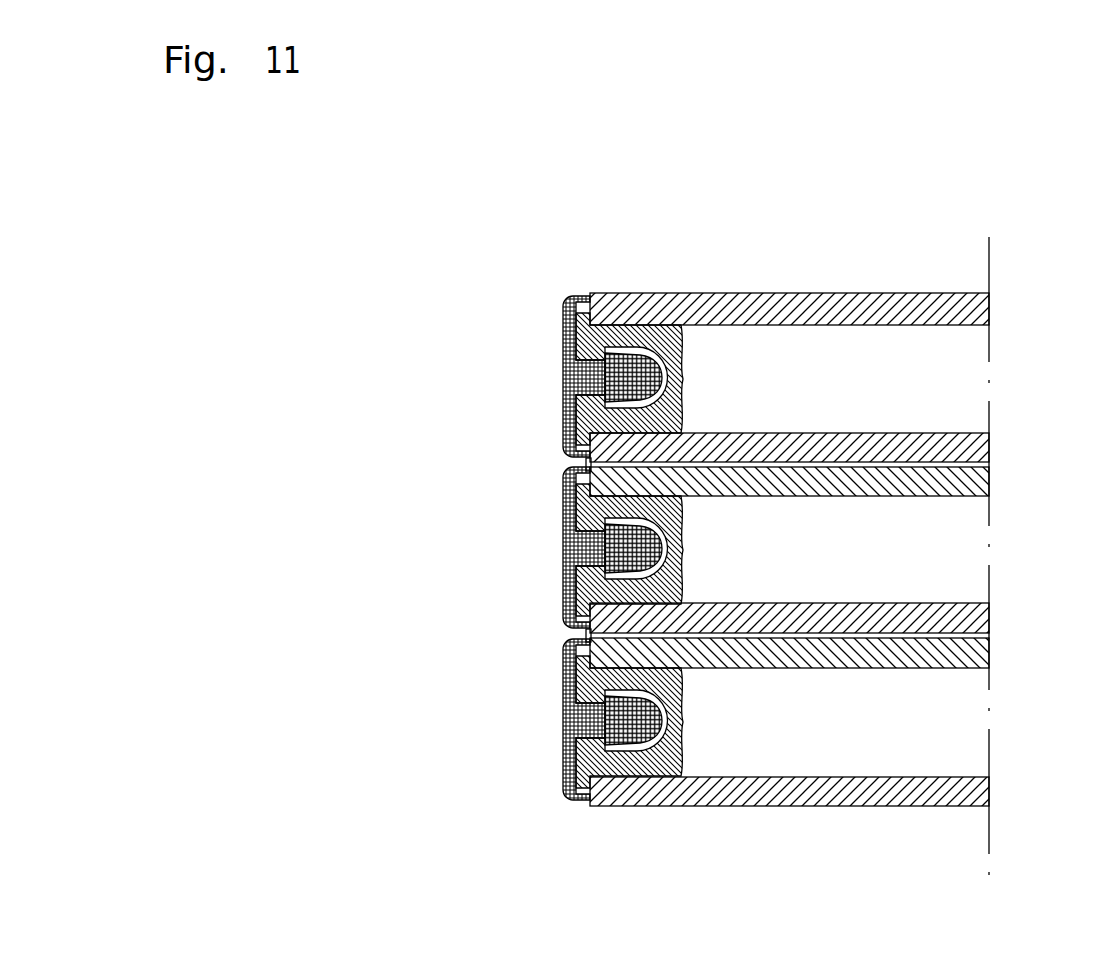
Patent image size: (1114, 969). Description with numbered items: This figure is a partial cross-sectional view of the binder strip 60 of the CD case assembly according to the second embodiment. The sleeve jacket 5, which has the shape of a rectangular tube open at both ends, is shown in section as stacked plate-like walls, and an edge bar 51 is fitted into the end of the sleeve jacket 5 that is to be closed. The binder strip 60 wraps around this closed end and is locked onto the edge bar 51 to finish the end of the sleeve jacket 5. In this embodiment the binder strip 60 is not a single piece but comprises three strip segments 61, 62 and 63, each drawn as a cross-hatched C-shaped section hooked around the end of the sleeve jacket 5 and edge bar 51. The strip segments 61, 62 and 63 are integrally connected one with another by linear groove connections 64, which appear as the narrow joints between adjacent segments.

The sleeve jacket 5 is at (797, 300).
The edge bar 51 is at (662, 330).
The binder strip 60 is at (524, 543).
The strip segment 61 is at (563, 383).
The strip segment 62 is at (563, 577).
The strip segment 63 is at (563, 732).
The linear groove connection 64 is at (586, 463).